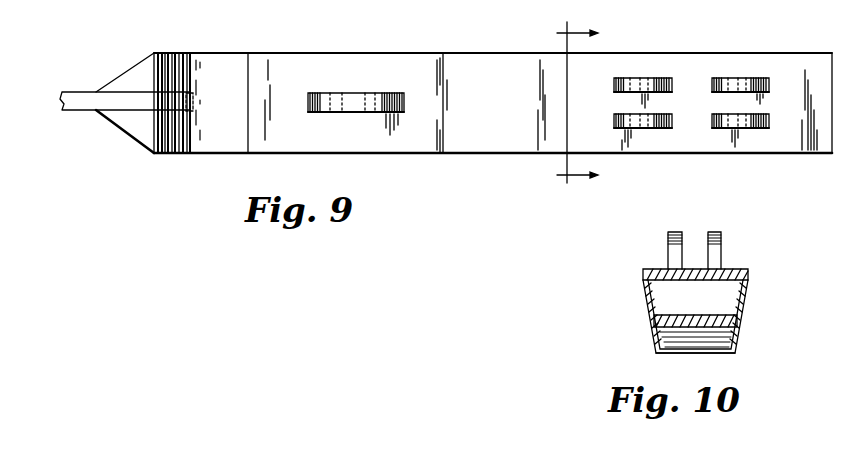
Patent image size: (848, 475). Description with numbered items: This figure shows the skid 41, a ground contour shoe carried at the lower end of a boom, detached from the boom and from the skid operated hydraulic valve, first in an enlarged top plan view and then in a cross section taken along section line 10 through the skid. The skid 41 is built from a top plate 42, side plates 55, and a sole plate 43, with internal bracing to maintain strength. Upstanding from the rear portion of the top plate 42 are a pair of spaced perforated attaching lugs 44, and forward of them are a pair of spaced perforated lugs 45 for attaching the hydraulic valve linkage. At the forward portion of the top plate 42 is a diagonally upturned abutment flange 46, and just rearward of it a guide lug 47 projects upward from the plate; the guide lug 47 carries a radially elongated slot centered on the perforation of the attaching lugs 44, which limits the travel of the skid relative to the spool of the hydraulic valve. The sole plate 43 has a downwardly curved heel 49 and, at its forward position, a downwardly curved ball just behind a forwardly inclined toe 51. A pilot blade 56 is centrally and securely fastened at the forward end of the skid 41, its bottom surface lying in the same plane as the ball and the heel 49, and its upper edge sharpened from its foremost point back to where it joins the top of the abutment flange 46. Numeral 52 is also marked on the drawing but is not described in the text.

In FIG. 9, the section line 10— 10 is at (575, 108).
In FIG. 9, the skid 41 is at (489, 50).
In FIG. 10, the skid 41 is at (642, 258).
In FIG. 9, the top plate 42 is at (495, 147).
In FIG. 10, the top plate 42 is at (730, 270).
In FIG. 10, the sole plate 43 is at (697, 318).
In FIG. 9, the attaching lugs 44 is at (720, 90).
In FIG. 9, the lugs for attaching hydraulic valve linkage 45 is at (614, 91).
In FIG. 10, the lugs for attaching hydraulic valve linkage 45 is at (715, 230).
In FIG. 9, the abutment flange 46 is at (210, 62).
In FIG. 9, the guide lug 47 is at (378, 92).
In FIG. 10, the heel 49 is at (716, 355).
In FIG. 9, the toe 51 is at (140, 124).
In FIG. 9, the conical surface 52 is at (120, 90).
In FIG. 10, the side plates 55 is at (647, 297).
In FIG. 9, the pilot blade 56 is at (80, 112).